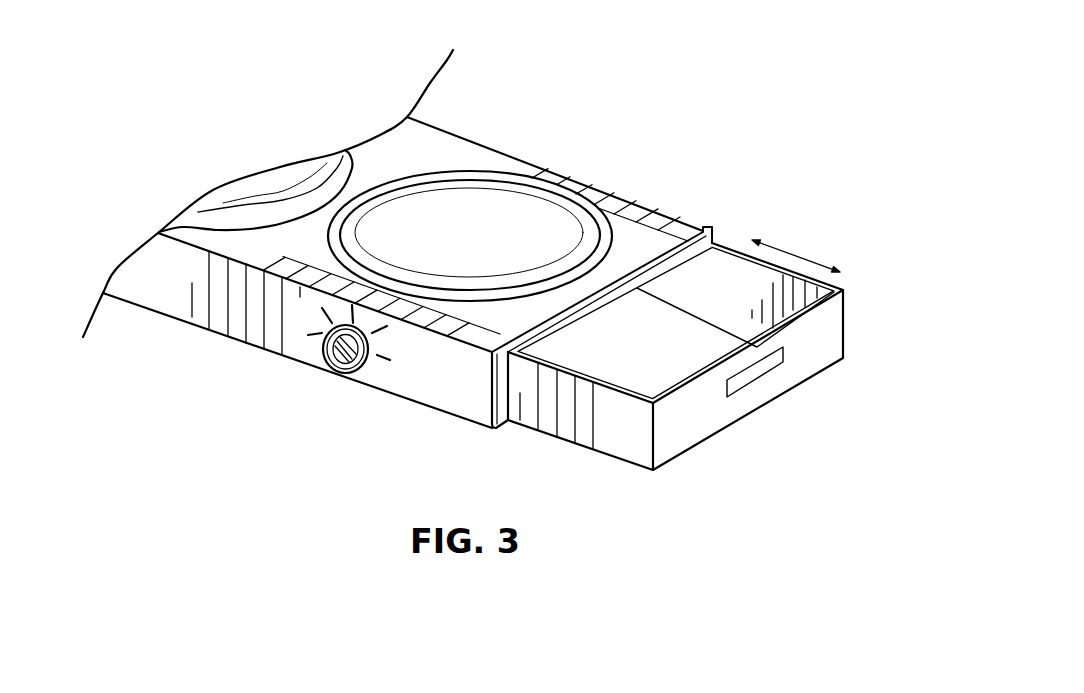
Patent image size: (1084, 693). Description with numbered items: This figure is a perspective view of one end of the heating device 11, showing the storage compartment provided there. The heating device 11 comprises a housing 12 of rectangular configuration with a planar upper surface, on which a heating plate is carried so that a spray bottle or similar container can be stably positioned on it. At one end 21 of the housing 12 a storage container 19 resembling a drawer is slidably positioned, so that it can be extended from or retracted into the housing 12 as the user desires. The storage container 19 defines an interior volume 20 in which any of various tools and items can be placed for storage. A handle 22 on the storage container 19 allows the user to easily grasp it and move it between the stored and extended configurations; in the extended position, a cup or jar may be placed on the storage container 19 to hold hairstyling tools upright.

The heating device 11 is at (603, 123).
The housing 12 is at (450, 150).
The storage container 19 is at (812, 348).
The interior volume 20 is at (684, 310).
The end 21 is at (656, 256).
The handle 22 is at (743, 380).